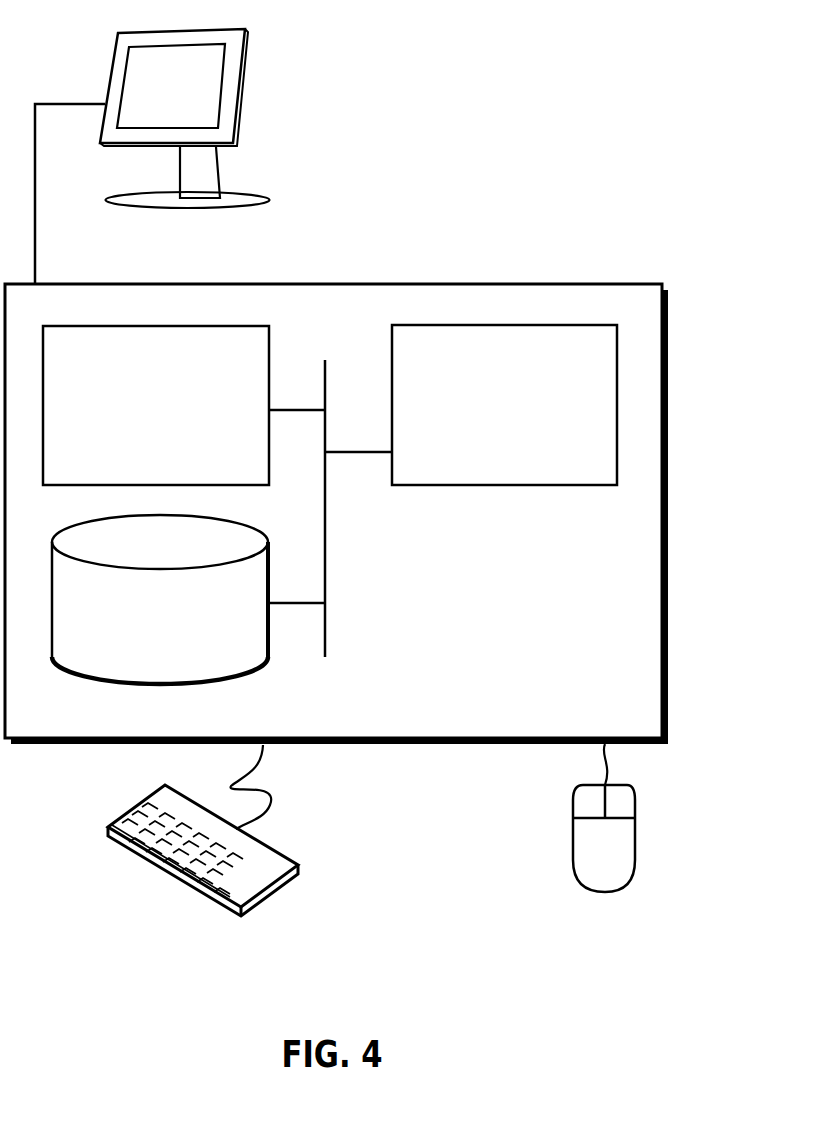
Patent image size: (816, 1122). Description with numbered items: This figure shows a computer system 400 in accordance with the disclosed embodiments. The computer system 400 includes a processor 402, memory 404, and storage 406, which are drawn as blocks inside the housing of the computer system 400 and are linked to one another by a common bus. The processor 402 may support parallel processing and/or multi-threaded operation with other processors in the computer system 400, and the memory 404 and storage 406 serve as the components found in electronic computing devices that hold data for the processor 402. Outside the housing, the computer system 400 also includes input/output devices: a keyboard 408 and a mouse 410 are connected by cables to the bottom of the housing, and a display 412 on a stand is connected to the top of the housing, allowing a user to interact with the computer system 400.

The computer system 400 is at (380, 262).
The processor 402 is at (486, 419).
The memory 404 is at (137, 417).
The storage 406 is at (142, 627).
The keyboard 408 is at (125, 850).
The mouse 410 is at (584, 859).
The display 412 is at (152, 156).